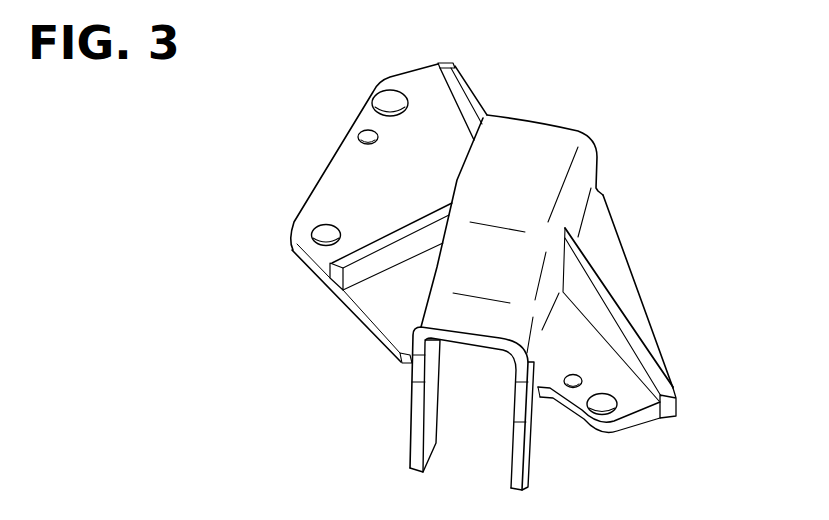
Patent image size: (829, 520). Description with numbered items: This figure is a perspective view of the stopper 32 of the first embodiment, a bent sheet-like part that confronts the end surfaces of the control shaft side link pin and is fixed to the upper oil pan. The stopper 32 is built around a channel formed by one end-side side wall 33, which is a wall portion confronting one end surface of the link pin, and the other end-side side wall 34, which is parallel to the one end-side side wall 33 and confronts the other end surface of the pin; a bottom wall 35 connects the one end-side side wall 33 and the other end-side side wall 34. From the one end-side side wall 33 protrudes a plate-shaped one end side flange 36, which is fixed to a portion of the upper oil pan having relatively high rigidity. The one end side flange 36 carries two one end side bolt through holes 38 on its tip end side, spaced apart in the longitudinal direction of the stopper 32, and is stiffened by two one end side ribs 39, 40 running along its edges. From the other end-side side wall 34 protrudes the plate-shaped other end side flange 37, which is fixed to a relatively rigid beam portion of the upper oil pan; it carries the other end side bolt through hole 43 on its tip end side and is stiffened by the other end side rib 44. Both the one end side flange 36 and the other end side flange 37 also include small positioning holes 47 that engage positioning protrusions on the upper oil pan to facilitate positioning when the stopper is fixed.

The stopper 32 is at (603, 124).
The one end-side side wall 33 is at (430, 391).
The other end-side side wall 34 is at (576, 207).
The bottom wall 35 is at (541, 137).
The one end side flange 36 is at (361, 168).
The other end side flange 37 is at (641, 305).
The one end side bolt through holes 38 is at (393, 97).
The one end side rib 39 is at (452, 62).
The one end side rib 40 is at (346, 290).
The other end side bolt through hole 43 is at (609, 403).
The other end side rib 44 is at (600, 286).
The positioning holes 47 is at (365, 136).